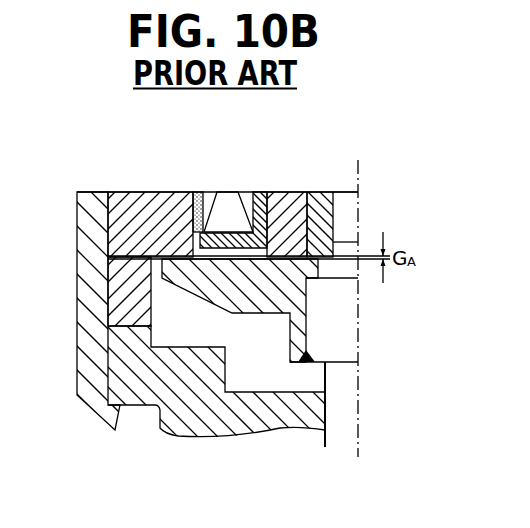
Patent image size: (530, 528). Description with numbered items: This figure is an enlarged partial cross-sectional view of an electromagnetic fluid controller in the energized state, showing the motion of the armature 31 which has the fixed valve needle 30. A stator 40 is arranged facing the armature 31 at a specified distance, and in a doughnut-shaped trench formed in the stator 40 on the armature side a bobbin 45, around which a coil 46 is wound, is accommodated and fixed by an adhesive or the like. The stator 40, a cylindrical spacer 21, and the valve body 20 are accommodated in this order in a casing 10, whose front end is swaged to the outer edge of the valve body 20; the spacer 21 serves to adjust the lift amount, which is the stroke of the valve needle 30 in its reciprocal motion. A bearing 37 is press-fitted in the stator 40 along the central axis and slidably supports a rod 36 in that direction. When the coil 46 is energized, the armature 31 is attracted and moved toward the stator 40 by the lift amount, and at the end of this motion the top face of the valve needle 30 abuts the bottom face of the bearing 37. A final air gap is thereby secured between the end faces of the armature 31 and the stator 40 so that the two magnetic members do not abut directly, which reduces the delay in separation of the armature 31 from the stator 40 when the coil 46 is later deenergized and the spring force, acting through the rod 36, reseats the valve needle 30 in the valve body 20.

The casing 10 is at (78, 220).
The valve body 20 is at (128, 361).
The cylindrical spacer 21 is at (118, 307).
The valve needle 30 is at (342, 350).
The armature 31 is at (265, 307).
The rod 36 is at (342, 217).
The bearing 37 is at (320, 206).
The stator 40 is at (150, 205).
The bobbin 45 is at (257, 198).
The coil 46 is at (218, 205).